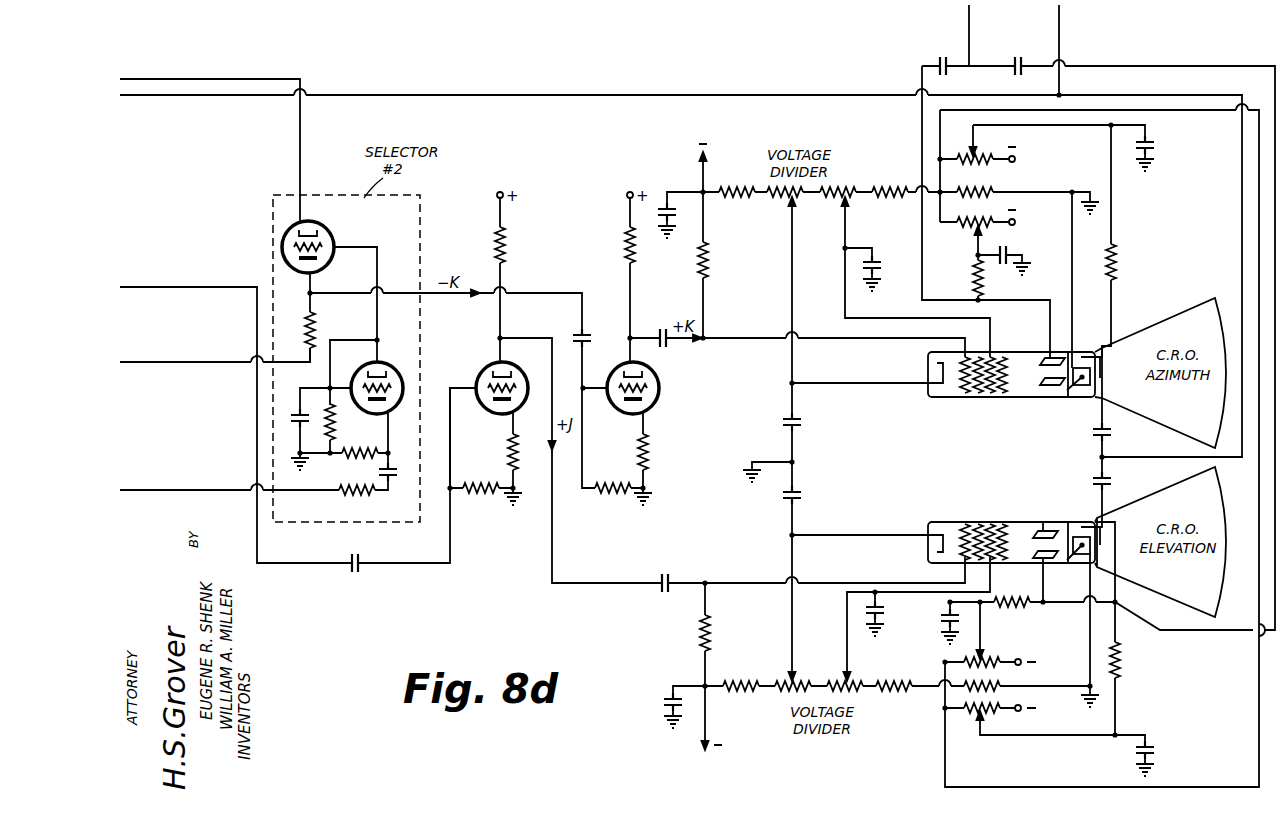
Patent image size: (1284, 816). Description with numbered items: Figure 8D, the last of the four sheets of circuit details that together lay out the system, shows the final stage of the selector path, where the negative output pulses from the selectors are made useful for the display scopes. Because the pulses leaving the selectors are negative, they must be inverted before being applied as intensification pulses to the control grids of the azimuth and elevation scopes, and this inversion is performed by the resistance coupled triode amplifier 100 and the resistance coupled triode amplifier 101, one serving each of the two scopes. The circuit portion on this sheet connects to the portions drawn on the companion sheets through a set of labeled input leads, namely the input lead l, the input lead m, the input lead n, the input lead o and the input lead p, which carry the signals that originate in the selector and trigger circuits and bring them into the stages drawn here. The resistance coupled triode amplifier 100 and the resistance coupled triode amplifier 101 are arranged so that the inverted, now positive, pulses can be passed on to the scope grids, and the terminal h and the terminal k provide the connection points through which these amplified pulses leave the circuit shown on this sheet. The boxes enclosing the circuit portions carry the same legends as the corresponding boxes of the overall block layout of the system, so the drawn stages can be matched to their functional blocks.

The resistance coupled triode amplifier 100 is at (489, 366).
The resistance coupled triode amplifier 101 is at (652, 406).
The input lead l is at (210, 140).
The input lead m is at (681, 273).
The input lead n is at (298, 419).
The input lead o is at (215, 352).
The input lead p is at (254, 482).
The terminal h is at (956, 35).
The terminal k is at (1067, 48).